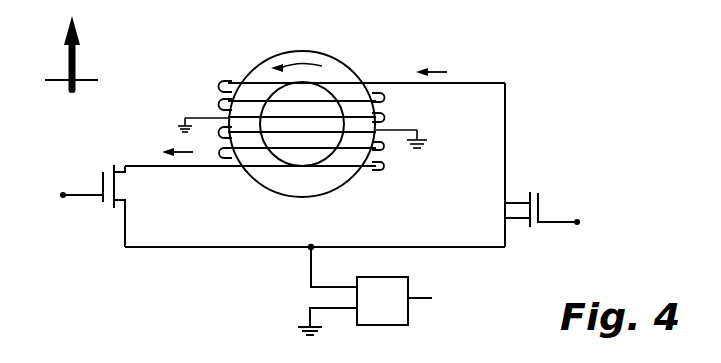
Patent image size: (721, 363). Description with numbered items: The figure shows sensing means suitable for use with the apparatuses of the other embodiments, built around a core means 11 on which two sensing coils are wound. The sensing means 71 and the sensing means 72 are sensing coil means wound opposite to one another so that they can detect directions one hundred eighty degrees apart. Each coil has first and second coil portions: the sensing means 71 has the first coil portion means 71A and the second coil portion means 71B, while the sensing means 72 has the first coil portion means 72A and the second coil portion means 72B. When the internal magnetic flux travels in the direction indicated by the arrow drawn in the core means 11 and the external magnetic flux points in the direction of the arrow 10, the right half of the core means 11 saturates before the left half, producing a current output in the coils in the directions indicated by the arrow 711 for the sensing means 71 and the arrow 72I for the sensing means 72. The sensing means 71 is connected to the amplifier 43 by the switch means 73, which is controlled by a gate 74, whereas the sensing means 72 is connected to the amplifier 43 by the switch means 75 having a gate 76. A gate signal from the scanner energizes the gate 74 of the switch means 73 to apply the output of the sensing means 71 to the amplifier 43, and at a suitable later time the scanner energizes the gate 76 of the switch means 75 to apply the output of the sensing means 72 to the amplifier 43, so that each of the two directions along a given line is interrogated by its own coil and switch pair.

The arrow 10 is at (69, 57).
The core means 11 is at (268, 58).
The sensing means 71 is at (343, 97).
The first coil portion means 71A is at (382, 84).
The second coil portion means 71B is at (226, 82).
The arrow 711 is at (447, 72).
The sensing means 72 is at (257, 168).
The first coil portion means 72A is at (220, 152).
The second coil portion means 72B is at (377, 155).
The arrow 72I is at (183, 152).
The switch means 73 is at (528, 207).
The gate 74 is at (577, 222).
The switch means 75 is at (114, 190).
The gate 76 is at (63, 194).
The amplifier 43 is at (392, 277).